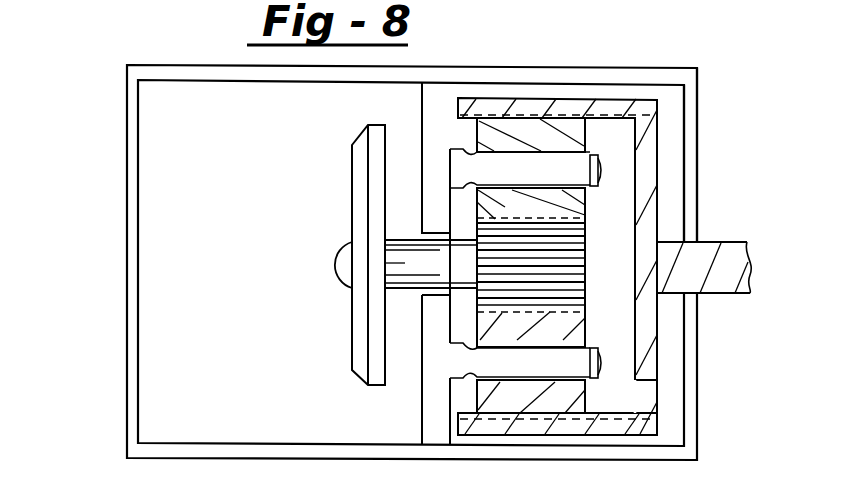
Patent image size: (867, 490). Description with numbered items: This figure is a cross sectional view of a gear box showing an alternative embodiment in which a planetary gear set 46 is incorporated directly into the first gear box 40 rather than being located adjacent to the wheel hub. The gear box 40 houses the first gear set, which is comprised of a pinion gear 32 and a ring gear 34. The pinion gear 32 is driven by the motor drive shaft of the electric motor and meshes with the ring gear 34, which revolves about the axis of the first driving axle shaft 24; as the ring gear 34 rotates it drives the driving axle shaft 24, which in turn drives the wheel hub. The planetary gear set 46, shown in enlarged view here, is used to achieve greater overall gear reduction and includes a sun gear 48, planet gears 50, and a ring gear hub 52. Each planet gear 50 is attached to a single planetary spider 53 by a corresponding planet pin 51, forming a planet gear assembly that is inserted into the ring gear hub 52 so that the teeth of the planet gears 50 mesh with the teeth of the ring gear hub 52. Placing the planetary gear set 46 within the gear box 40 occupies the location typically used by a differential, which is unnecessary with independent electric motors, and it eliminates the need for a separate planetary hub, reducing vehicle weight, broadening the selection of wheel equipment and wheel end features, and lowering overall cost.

The first driving axle shaft 24 is at (728, 252).
The pinion gear 32 is at (330, 268).
The ring gear 34 is at (360, 145).
The first gear box 40 is at (135, 302).
The planetary gear set 46 is at (678, 128).
The sun gear 48 is at (542, 238).
The planet gears 50 is at (573, 130).
The planet pin 51 is at (600, 363).
The ring gear hub 52 is at (617, 423).
The planetary spider 53 is at (440, 397).